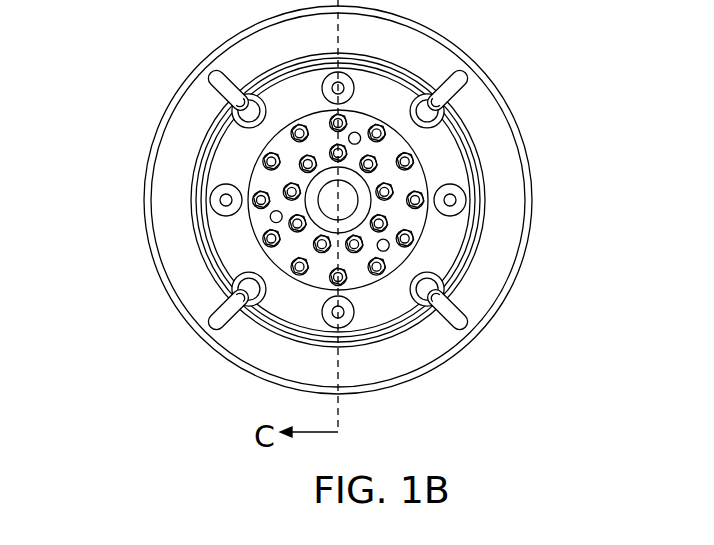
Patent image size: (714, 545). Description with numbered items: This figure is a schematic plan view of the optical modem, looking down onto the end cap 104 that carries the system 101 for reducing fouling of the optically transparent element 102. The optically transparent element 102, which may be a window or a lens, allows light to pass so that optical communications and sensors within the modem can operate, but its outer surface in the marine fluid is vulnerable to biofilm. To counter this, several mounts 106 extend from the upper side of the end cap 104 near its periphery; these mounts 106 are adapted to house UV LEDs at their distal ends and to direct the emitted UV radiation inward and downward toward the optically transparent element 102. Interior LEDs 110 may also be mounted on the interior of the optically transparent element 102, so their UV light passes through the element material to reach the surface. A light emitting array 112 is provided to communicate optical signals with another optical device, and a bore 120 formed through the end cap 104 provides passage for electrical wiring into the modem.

The system for reducing fouling 101 is at (319, 200).
The optically transparent element 102 is at (193, 153).
The end cap 104 is at (492, 76).
The mount 106 is at (464, 323).
The interior LED 110 is at (227, 213).
The light emitting array 112 is at (417, 170).
The bore 120 is at (348, 199).